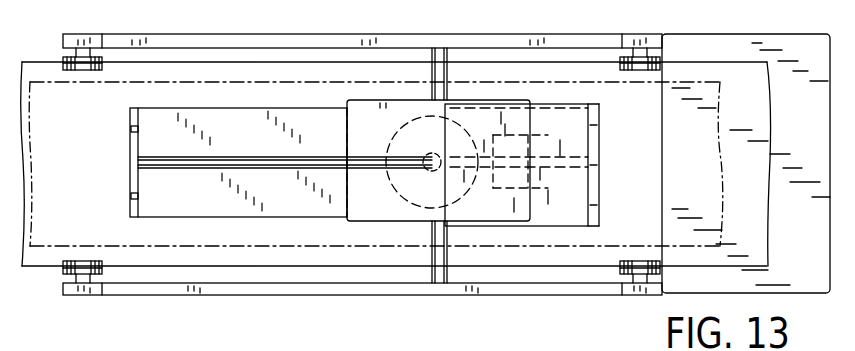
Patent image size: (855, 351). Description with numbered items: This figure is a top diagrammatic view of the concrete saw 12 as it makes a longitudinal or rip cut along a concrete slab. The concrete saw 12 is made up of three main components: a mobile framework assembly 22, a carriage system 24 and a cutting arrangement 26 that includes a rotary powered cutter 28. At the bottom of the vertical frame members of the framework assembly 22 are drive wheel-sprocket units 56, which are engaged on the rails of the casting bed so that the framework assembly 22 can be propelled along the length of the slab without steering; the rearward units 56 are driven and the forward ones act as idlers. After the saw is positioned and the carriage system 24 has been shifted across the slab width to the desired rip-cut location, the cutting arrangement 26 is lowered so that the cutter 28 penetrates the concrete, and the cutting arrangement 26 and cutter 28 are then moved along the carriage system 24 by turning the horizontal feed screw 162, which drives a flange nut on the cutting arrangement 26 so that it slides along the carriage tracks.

The concrete saw 12 is at (523, 33).
The mobile framework assembly 22 is at (285, 34).
The carriage system 24 is at (181, 217).
The cutting arrangement 26 is at (600, 178).
The rotary powered cutter 28 is at (543, 222).
The drive wheel-sprocket unit 56 is at (86, 62).
The second horizontal feed screw 162 is at (228, 163).